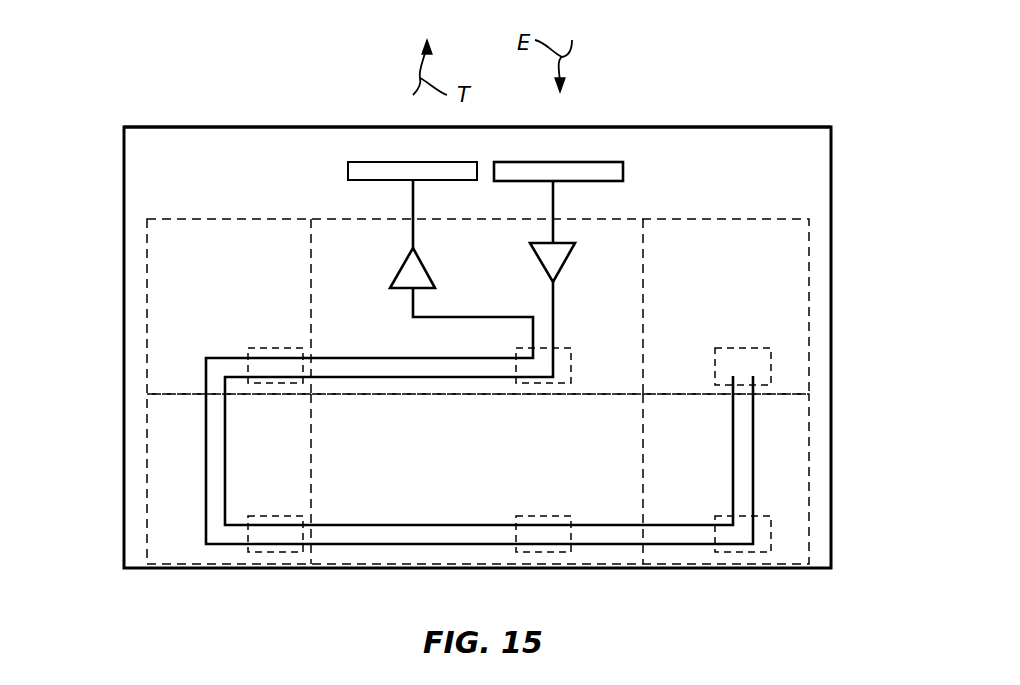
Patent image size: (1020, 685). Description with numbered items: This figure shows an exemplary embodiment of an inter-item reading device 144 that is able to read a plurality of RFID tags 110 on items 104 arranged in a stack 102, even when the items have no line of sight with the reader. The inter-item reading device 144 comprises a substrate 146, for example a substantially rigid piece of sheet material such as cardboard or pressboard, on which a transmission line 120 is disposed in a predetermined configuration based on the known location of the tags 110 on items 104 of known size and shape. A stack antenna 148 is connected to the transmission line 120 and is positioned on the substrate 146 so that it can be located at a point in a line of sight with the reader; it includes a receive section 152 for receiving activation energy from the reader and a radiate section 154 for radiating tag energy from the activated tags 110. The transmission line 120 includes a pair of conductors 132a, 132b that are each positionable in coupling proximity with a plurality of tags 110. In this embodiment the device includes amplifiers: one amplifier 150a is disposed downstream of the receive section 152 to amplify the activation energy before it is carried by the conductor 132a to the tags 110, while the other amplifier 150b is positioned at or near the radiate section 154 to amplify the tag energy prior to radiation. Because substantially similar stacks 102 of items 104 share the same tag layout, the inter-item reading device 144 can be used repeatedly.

The stack 102 is at (812, 267).
The item 104 is at (790, 473).
The tag 110 is at (735, 347).
The transmission line 120 is at (236, 354).
The conductor 132a is at (555, 213).
The conductor 132b is at (412, 213).
The inter-item reading device 144 is at (273, 128).
The substrate 146 is at (833, 176).
The stack antenna 148 is at (578, 152).
The amplifier 150a is at (540, 268).
The amplifier 150b is at (410, 292).
The receive section 152 is at (624, 172).
The radiate section 154 is at (348, 172).